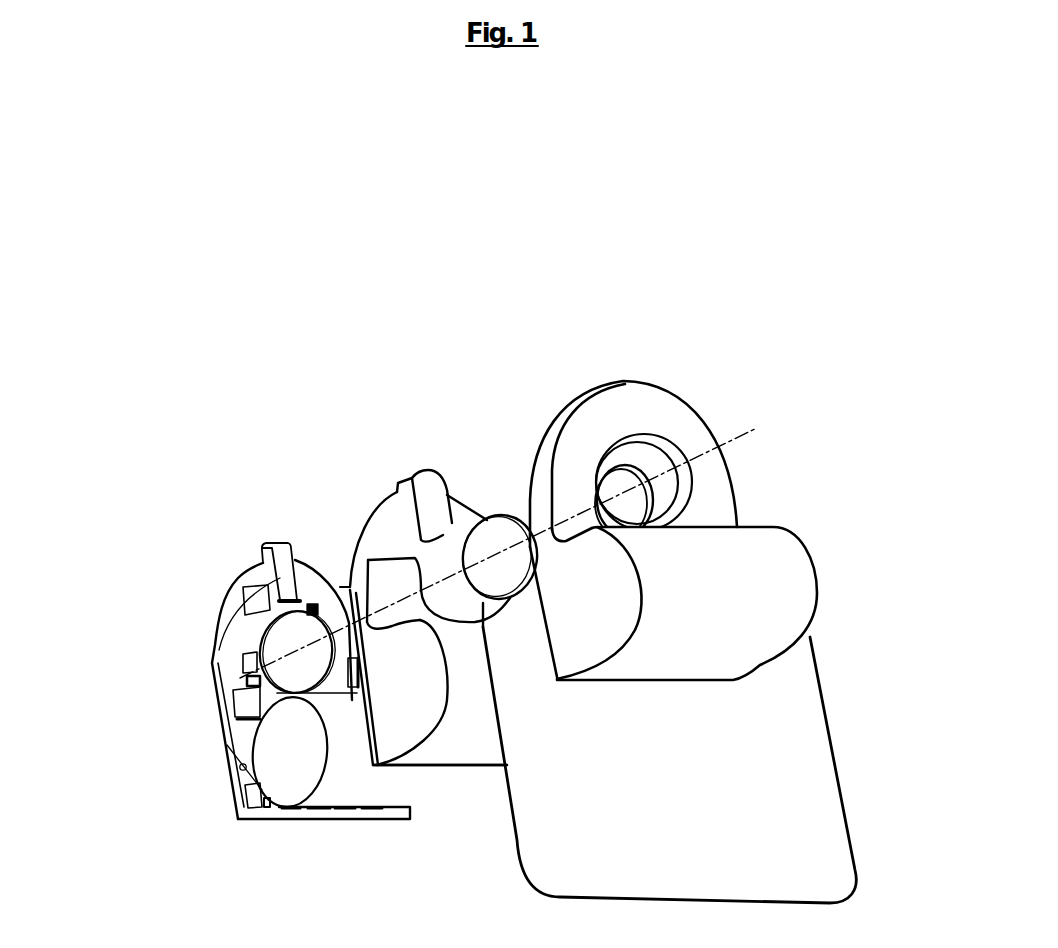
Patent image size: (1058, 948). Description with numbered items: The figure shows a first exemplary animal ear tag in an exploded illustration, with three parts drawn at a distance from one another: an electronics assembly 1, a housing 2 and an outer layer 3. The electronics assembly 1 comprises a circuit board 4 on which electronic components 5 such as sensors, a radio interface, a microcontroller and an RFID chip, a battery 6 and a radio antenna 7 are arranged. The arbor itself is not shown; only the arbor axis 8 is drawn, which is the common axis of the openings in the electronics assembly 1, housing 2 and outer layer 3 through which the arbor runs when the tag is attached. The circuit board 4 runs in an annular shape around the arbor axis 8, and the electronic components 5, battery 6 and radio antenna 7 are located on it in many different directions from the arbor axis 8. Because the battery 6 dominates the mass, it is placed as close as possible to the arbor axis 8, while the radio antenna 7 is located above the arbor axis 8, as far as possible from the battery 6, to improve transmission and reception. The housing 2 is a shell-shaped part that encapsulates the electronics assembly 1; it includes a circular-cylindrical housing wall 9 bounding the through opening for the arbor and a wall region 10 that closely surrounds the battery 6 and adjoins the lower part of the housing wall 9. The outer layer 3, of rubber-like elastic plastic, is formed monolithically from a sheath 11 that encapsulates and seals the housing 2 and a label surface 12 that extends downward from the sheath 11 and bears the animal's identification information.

The electronics assembly 1 is at (223, 576).
The housing 2 is at (375, 483).
The outer layer 3 is at (546, 389).
The circuit board 4 is at (247, 738).
The electronic components 5 is at (257, 765).
The battery 6 is at (343, 795).
The radio antenna 7 is at (295, 562).
The arbor axis 8 is at (757, 426).
The housing wall 9 is at (457, 538).
The wall region 10 is at (458, 760).
The sheath 11 is at (782, 585).
The label surface 12 is at (780, 772).